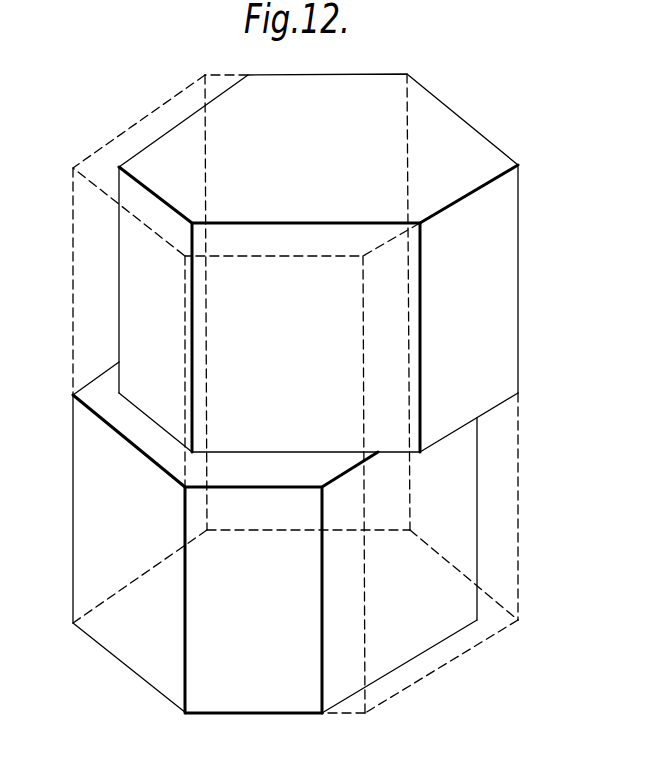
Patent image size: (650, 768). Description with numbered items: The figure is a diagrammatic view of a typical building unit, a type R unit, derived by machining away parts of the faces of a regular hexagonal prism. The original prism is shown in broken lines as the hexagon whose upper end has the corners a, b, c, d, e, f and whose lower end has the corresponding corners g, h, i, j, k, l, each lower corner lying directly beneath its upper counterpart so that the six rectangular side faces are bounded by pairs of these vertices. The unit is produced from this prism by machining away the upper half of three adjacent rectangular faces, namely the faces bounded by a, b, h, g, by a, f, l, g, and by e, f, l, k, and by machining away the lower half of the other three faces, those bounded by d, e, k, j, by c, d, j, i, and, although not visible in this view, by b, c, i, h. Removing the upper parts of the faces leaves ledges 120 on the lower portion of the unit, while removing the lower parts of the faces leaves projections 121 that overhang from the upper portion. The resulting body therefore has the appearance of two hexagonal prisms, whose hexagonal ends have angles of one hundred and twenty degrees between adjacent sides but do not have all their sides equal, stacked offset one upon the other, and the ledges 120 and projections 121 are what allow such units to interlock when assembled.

The ledges 120 is at (98, 388).
The projections 121 is at (488, 412).
The hexagon vertex a is at (131, 235).
The hexagon vertex b is at (223, 292).
The hexagon vertex c is at (407, 292).
The hexagon vertex d is at (524, 387).
The hexagon vertex e is at (302, 468).
The hexagon vertex f is at (177, 370).
The hexagon vertex g is at (132, 582).
The hexagon vertex h is at (308, 521).
The hexagon vertex i is at (464, 566).
The hexagon vertex j is at (447, 659).
The hexagon vertex k is at (347, 724).
The hexagon vertex l is at (129, 681).